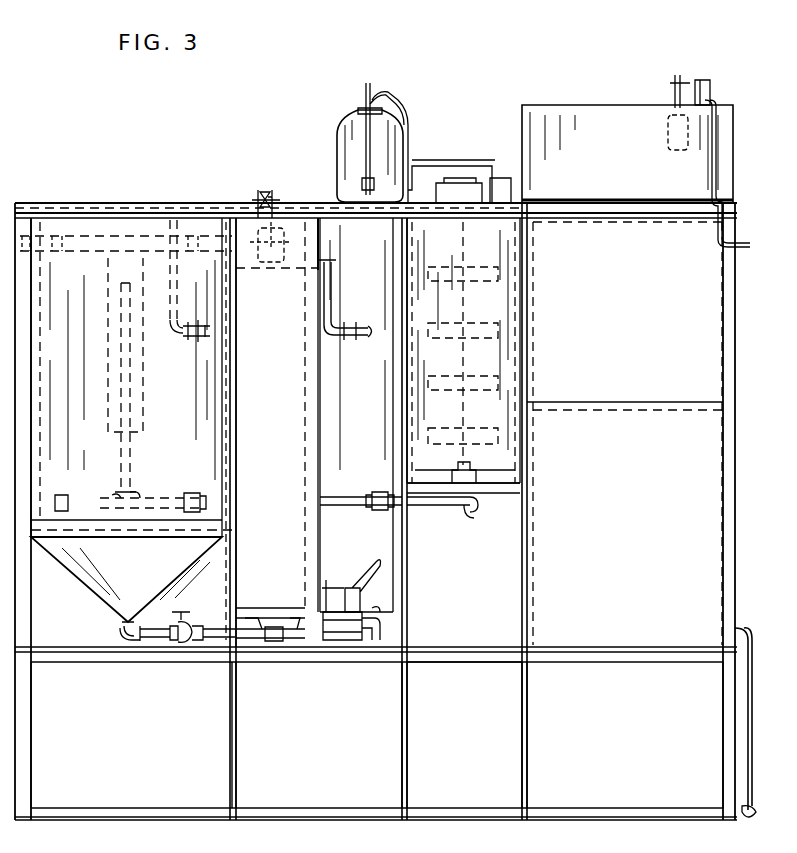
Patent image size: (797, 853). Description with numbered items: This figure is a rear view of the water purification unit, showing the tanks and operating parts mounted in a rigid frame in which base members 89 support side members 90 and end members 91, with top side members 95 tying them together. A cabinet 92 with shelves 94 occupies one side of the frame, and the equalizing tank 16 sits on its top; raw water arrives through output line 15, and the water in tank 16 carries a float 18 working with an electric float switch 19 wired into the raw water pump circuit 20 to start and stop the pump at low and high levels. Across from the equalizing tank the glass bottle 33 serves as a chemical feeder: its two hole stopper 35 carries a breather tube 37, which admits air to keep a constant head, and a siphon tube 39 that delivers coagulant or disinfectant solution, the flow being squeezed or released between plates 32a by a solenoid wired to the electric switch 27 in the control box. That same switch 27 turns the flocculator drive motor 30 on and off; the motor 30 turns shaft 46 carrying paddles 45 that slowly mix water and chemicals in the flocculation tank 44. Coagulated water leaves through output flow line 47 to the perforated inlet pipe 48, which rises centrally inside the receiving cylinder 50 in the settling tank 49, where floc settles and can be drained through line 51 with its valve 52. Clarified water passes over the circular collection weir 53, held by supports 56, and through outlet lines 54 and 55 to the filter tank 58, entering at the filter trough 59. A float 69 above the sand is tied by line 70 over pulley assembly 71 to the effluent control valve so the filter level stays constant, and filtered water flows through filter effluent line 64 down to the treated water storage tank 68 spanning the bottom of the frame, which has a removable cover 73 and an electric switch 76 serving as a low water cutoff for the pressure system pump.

The output line 15 is at (750, 714).
The equalizing tank 16 is at (618, 172).
The float 18 is at (674, 135).
The electric float switch 19 is at (712, 60).
The raw water pump circuit 20 is at (748, 230).
The electric switch 27 is at (498, 185).
The flocculator drive motor 30 is at (462, 185).
The plates 32a is at (415, 190).
The glass bottle 33 is at (350, 135).
The two hole stopper 35 is at (365, 108).
The breather tube 37 is at (366, 90).
The siphon tube 39 is at (402, 118).
The flocculation tank 44 is at (418, 442).
The paddles 45 is at (478, 386).
The shaft 46 is at (466, 340).
The output flow line 47 is at (430, 522).
The perforated inlet pipe 48 is at (128, 465).
The settling tank 49 is at (168, 410).
The receiving cylinder 50 is at (108, 260).
The drain line 51 is at (120, 632).
The valve 52 is at (186, 622).
The circular collection weir 53 is at (60, 240).
The outlet line 54 is at (172, 325).
The outlet line 55 is at (340, 332).
The supports 56 is at (42, 240).
The filter tank 58 is at (282, 408).
The filter trough 59 is at (298, 250).
The filter effluent line 64 is at (336, 640).
The treated water storage tank 68 is at (470, 703).
The float 69 is at (262, 246).
The line 70 is at (258, 196).
The pulley assembly 71 is at (280, 185).
The removable cover 73 is at (352, 640).
The electric switch 76 is at (350, 600).
The base members 89 is at (305, 815).
The side members 90 is at (228, 730).
The end members 91 is at (22, 743).
The cabinet 92 is at (625, 433).
The shelves 94 is at (648, 402).
The top side members 95 is at (170, 212).